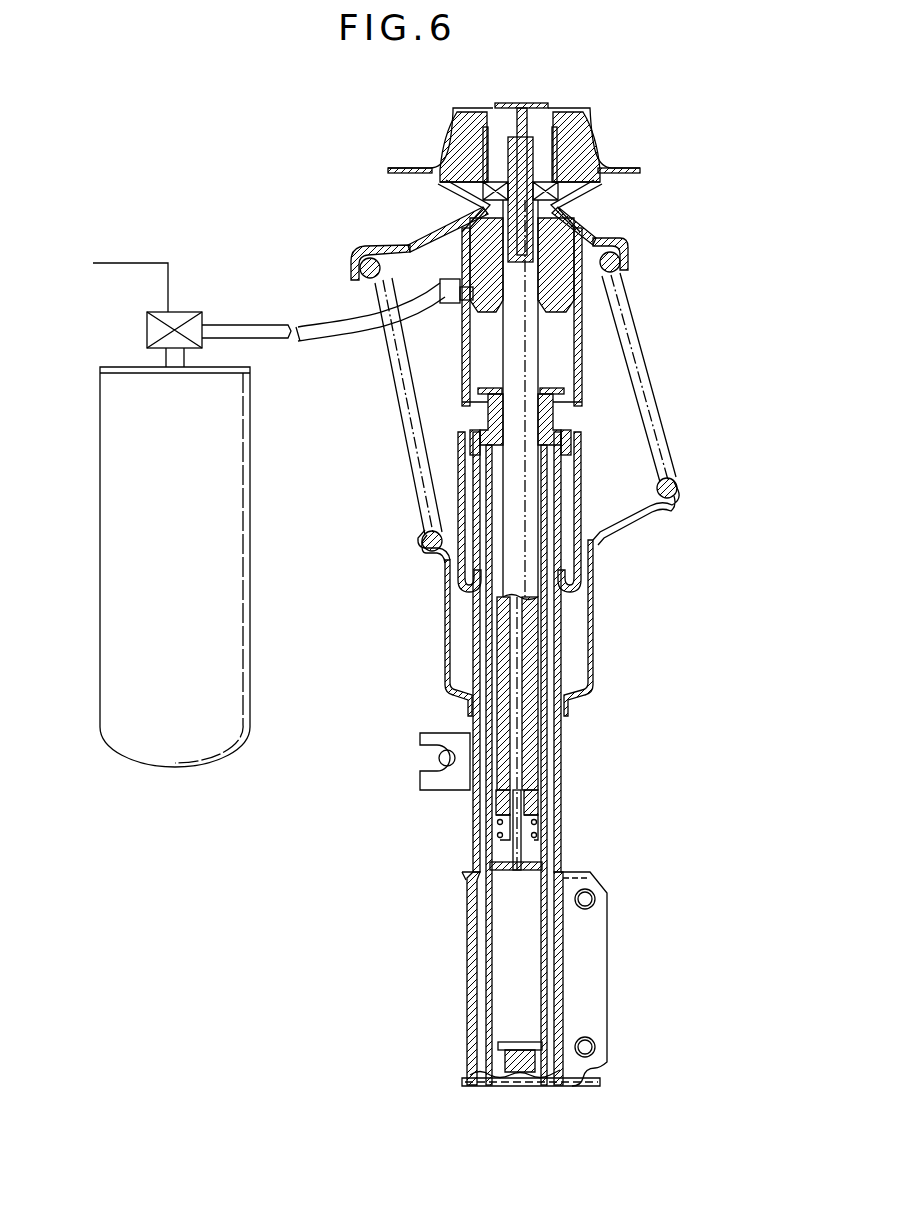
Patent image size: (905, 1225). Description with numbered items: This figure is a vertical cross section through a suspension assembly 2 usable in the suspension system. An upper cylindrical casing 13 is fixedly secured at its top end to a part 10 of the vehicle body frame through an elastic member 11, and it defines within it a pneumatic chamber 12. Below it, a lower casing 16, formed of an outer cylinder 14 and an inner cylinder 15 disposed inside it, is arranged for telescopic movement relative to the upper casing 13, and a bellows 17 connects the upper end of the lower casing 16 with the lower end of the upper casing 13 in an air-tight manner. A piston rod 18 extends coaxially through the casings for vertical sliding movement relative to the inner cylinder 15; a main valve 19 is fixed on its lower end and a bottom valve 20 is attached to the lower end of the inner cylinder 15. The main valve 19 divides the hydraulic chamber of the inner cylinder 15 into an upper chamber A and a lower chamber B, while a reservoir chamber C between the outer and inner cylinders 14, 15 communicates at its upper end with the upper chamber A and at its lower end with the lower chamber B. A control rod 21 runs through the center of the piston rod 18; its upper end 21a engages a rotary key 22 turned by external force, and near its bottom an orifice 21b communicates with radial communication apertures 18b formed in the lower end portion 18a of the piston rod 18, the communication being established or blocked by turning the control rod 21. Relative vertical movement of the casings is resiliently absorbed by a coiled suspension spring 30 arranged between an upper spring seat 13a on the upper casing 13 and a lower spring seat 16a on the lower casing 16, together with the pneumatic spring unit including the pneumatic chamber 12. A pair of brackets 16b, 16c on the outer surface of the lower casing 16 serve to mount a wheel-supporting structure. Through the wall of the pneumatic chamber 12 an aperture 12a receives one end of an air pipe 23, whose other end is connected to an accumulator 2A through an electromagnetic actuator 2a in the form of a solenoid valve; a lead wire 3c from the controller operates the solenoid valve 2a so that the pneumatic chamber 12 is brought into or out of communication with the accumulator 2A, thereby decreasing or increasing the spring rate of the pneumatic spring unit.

The suspension assembly 2 is at (650, 250).
The accumulator 2A is at (240, 572).
The electromagnetic actuator 2a is at (195, 311).
The lead wire 3c is at (128, 262).
The part of the body frame 10 is at (636, 166).
The elastic member 11 is at (590, 136).
The pneumatic chamber 12 is at (468, 358).
The aperture 12a is at (470, 300).
The upper cylindrical casing 13 is at (583, 330).
The upper spring seat 13a is at (402, 243).
The outer cylinder 14 is at (562, 640).
The inner cylinder 15 is at (556, 756).
The lower casing 16 is at (460, 819).
The lower spring seat 16a is at (443, 602).
The bracket 16b is at (592, 947).
The bracket 16c is at (430, 776).
The bellows 17 is at (583, 486).
The piston rod 18 is at (522, 356).
The lower end portion of the piston rod 18a is at (537, 812).
The radial communication apertures 18b is at (496, 816).
The main valve 19 is at (558, 844).
The bottom valve 20 is at (497, 1058).
The control rod 21 is at (465, 162).
The upper end of the control rod 21a is at (507, 140).
The orifice 21b is at (530, 832).
The rotary key 22 is at (545, 104).
The air pipe 23 is at (326, 340).
The coiled suspension spring 30 is at (670, 482).
The upper chamber A is at (495, 698).
The lower chamber B is at (525, 971).
The reservoir chamber C is at (483, 917).